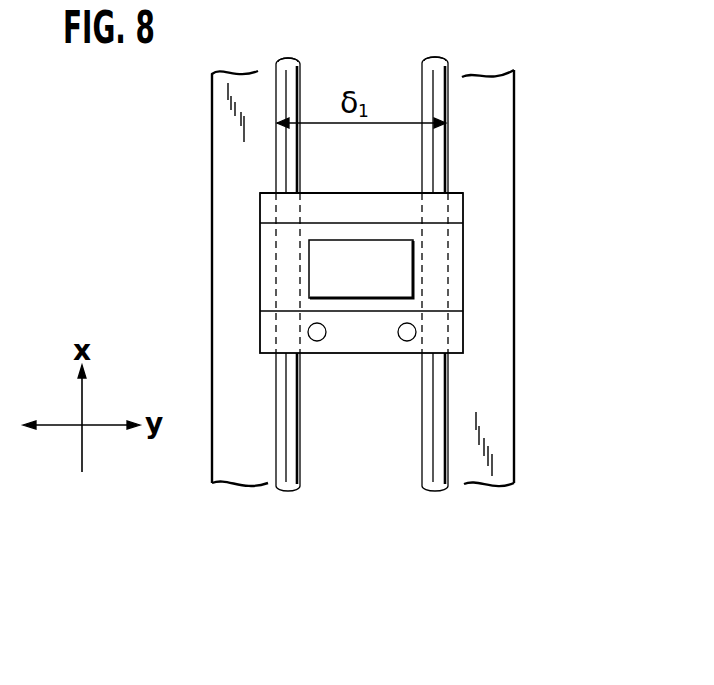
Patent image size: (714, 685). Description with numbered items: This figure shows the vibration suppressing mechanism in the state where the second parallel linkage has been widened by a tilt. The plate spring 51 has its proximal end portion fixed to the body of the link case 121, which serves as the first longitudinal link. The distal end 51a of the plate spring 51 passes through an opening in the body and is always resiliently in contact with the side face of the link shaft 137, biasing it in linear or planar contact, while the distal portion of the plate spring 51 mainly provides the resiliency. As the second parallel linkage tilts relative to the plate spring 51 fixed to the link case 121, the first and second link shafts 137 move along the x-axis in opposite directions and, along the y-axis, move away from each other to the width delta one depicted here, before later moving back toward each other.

The plate spring 51 is at (435, 270).
The distal end of the plate spring 51a is at (463, 210).
The link case 121 is at (514, 425).
The link shaft 137 is at (452, 493).